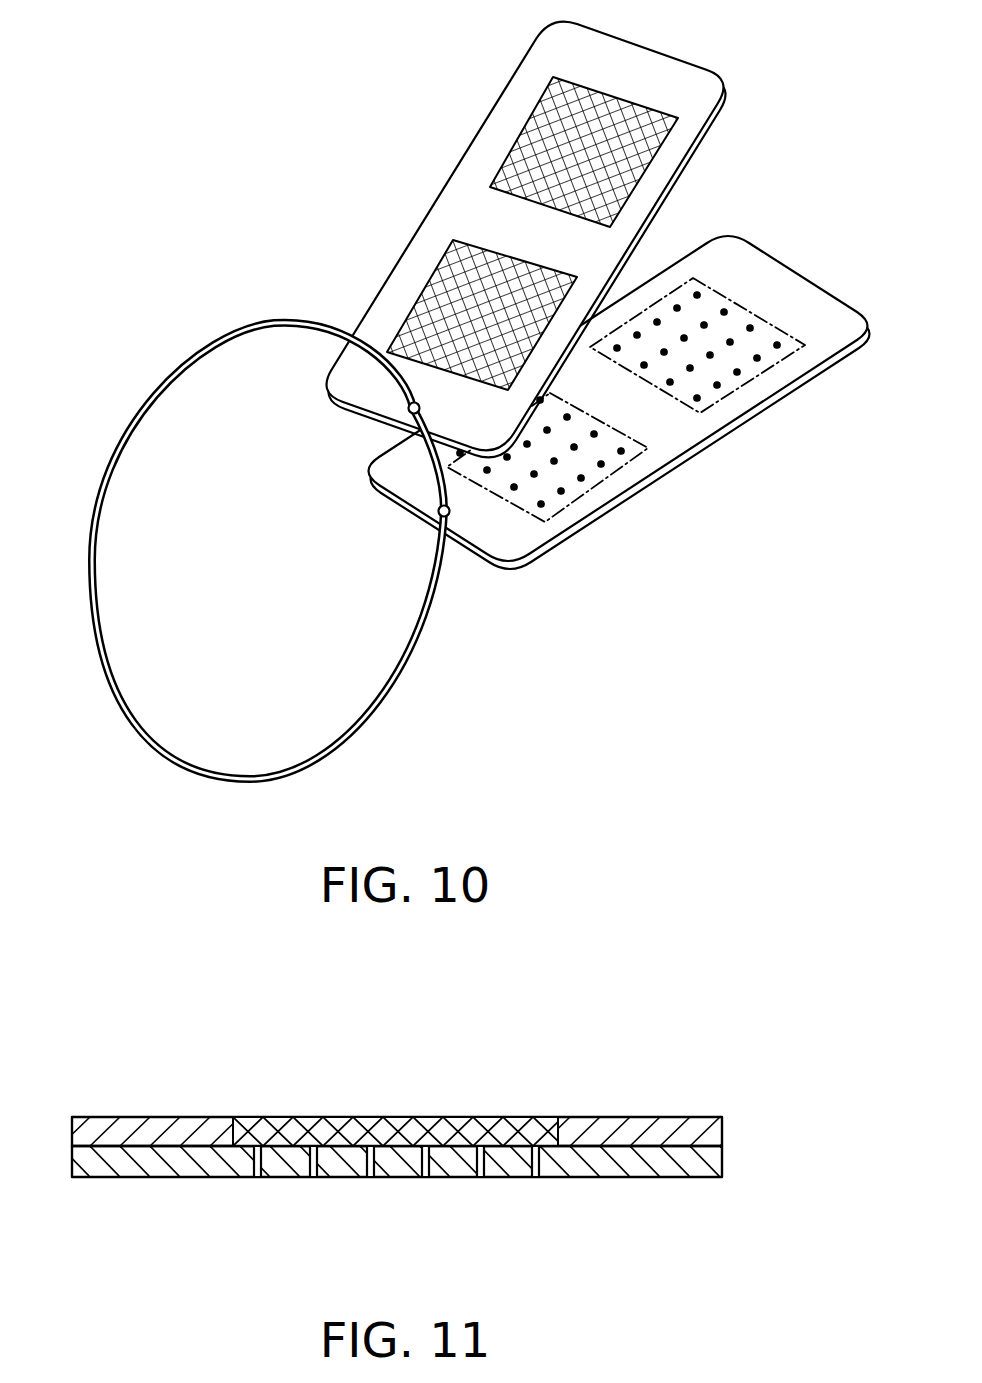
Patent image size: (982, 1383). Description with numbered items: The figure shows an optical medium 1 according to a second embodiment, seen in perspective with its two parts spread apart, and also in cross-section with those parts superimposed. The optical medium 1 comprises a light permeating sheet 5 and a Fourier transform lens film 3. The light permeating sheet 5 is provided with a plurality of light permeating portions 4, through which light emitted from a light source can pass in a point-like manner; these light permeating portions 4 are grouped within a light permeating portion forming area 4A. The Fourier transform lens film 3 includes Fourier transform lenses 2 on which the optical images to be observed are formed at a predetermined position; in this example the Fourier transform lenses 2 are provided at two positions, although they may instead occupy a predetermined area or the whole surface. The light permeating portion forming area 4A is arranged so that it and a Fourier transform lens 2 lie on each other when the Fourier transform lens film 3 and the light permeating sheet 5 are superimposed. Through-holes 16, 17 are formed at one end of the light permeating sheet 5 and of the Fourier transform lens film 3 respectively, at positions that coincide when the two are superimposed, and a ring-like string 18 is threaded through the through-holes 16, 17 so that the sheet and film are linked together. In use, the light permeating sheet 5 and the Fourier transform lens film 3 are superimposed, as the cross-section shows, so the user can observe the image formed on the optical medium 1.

In FIG. 10, the optical medium 1 is at (297, 233).
In FIG. 10, the Fourier transform lens 2 is at (537, 140).
In FIG. 11, the Fourier transform lens 2 is at (452, 1117).
In FIG. 10, the Fourier transform lens film 3 is at (670, 68).
In FIG. 11, the Fourier transform lens film 3 is at (722, 1127).
In FIG. 10, the light permeating portion 4 is at (742, 372).
In FIG. 11, the light permeating portion 4 is at (425, 1177).
In FIG. 10, the light permeating portion forming area 4A is at (722, 290).
In FIG. 10, the light permeating sheet 5 is at (798, 300).
In FIG. 11, the light permeating sheet 5 is at (722, 1162).
In FIG. 10, the through-hole 16 is at (438, 515).
In FIG. 10, the through-hole 17 is at (405, 418).
In FIG. 10, the ring-like string 18 is at (117, 452).